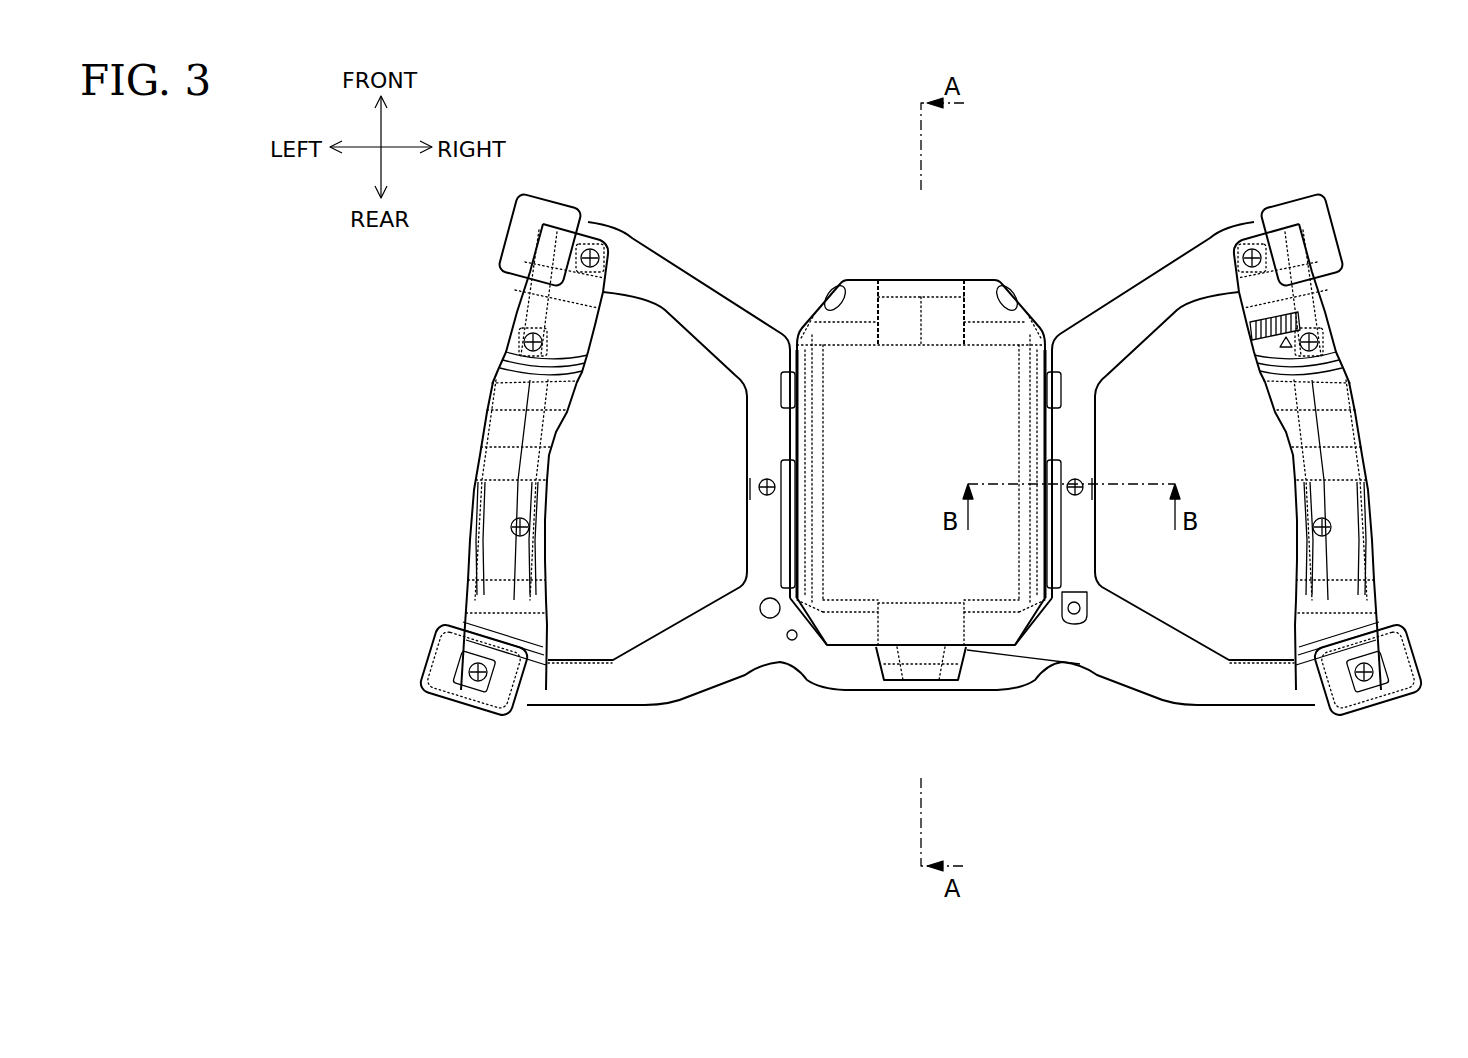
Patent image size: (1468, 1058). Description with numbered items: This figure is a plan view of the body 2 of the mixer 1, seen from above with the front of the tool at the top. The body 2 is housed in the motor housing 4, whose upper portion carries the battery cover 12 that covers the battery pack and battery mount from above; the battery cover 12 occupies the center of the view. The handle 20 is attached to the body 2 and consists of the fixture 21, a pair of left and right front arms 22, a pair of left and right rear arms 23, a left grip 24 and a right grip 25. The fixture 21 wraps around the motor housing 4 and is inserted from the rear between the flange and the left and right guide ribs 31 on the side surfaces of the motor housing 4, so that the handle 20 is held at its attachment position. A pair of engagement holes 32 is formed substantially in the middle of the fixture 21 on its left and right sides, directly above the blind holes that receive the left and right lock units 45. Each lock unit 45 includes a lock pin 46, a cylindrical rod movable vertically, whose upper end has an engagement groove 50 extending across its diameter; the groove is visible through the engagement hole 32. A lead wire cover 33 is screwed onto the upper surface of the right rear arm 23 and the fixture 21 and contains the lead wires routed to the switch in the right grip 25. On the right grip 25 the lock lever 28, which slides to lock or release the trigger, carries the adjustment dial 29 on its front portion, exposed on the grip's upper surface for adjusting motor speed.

The mixer 1 is at (1009, 198).
The body 2 is at (966, 264).
The motor housing 4 is at (813, 300).
The battery cover 12 is at (895, 398).
The handle 20 is at (1162, 258).
The fixture 21 is at (862, 677).
The front arms 22 is at (657, 268).
The rear arms 23 is at (590, 690).
The left grip 24 is at (482, 425).
The right grip 25 is at (1362, 420).
The lock lever 28 is at (1343, 348).
The adjustment dial 29 is at (1300, 320).
The guide ribs 31 is at (780, 389).
The engagement holes 32 is at (752, 485).
The lead wire cover 33 is at (1157, 670).
The lock unit 45 is at (760, 463).
The lock pin 46 is at (756, 488).
The engagement groove 50 is at (805, 475).